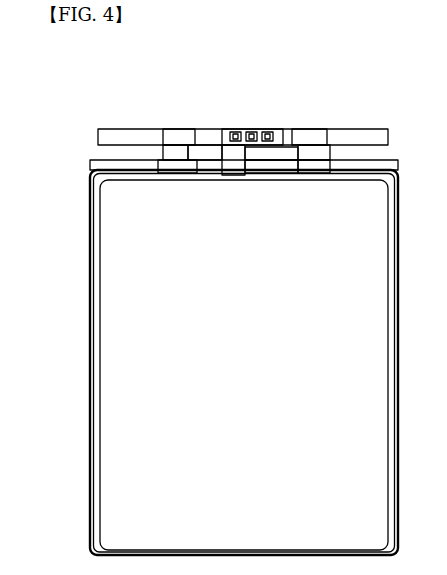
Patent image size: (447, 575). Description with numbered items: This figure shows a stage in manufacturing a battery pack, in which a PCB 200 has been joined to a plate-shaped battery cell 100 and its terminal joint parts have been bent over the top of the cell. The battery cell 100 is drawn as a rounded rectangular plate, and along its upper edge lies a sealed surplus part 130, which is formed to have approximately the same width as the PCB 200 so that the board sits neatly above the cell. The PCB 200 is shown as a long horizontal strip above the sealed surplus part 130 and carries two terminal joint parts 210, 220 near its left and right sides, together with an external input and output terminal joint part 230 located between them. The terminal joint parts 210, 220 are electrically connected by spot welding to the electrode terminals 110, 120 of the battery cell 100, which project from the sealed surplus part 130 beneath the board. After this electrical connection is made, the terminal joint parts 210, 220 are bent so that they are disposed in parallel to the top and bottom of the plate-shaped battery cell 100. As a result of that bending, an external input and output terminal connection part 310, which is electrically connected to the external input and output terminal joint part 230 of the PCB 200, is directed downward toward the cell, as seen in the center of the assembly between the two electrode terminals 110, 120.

The plate-shaped battery cell 100 is at (261, 433).
The electrode terminal 110 is at (177, 155).
The electrode terminal 120 is at (320, 153).
The sealed surplus part 130 is at (144, 171).
The PCB 200 is at (90, 134).
The terminal joint part 210 is at (178, 135).
The terminal joint part 220 is at (310, 137).
The external input and output terminal joint part 230 is at (253, 128).
The external input and output terminal connection part 310 is at (248, 150).